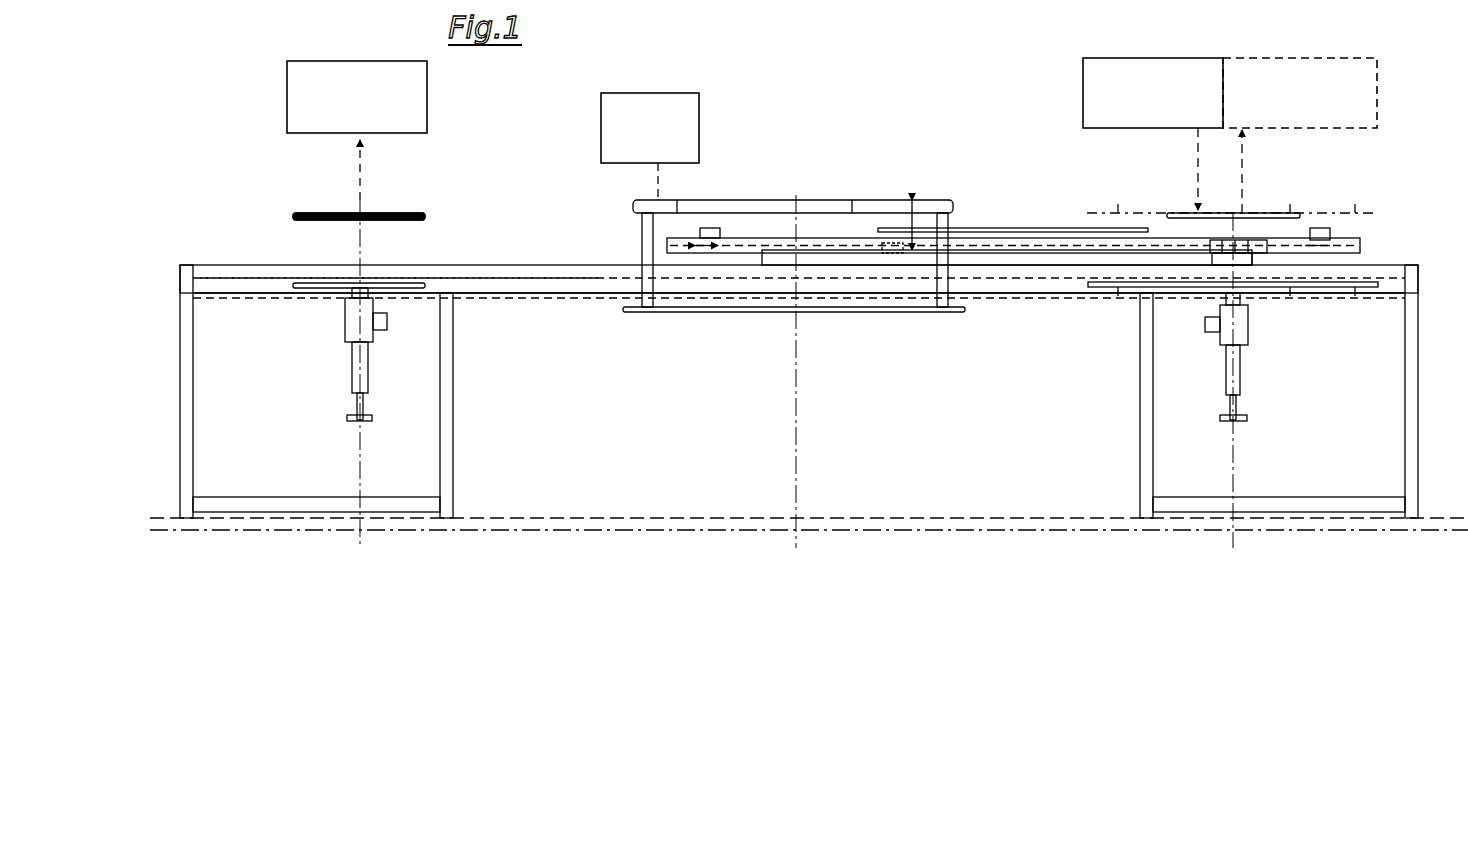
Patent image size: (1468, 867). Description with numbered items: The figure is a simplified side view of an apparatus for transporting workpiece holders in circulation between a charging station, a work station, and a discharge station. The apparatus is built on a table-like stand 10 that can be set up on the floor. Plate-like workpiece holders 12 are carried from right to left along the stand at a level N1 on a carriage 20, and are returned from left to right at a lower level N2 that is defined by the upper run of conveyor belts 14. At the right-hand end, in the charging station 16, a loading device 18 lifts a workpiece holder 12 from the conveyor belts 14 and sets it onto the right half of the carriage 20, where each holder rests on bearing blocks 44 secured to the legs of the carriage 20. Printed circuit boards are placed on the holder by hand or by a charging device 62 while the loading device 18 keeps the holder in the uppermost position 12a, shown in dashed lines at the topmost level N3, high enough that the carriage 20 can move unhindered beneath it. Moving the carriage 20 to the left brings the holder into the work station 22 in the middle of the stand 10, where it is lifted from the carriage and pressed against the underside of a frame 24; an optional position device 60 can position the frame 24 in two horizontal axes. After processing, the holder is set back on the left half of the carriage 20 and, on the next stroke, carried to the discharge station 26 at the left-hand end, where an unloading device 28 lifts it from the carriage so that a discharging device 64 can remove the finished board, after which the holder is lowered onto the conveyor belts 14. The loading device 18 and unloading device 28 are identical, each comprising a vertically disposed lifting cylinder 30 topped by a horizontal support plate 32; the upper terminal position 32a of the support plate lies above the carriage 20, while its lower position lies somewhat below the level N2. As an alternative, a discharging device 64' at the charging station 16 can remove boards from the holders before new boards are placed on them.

The table-like stand 10 is at (232, 264).
The workpiece holder 12 is at (962, 227).
The uppermost position of workpiece holder 12a is at (1308, 212).
The conveyor belts 14 is at (500, 277).
The charging station 16 is at (1180, 188).
The loading device 18 is at (1215, 335).
The carriage 20 is at (1358, 247).
The work station 22 is at (796, 198).
The frame 24 is at (868, 203).
The discharge station 26 is at (328, 199).
The unloading device 28 is at (378, 345).
The lifting cylinder 30 is at (366, 366).
The support plate 32 is at (305, 285).
The upper terminal position of support plate 32a is at (395, 212).
The bearing block 44 is at (705, 228).
The position device 60 is at (601, 125).
The charging device 62 is at (1112, 58).
The discharging device 64 is at (394, 97).
The discharging device 64' is at (1300, 65).
The level N1 is at (1000, 226).
The level N2 is at (563, 277).
The level N3 is at (1121, 210).